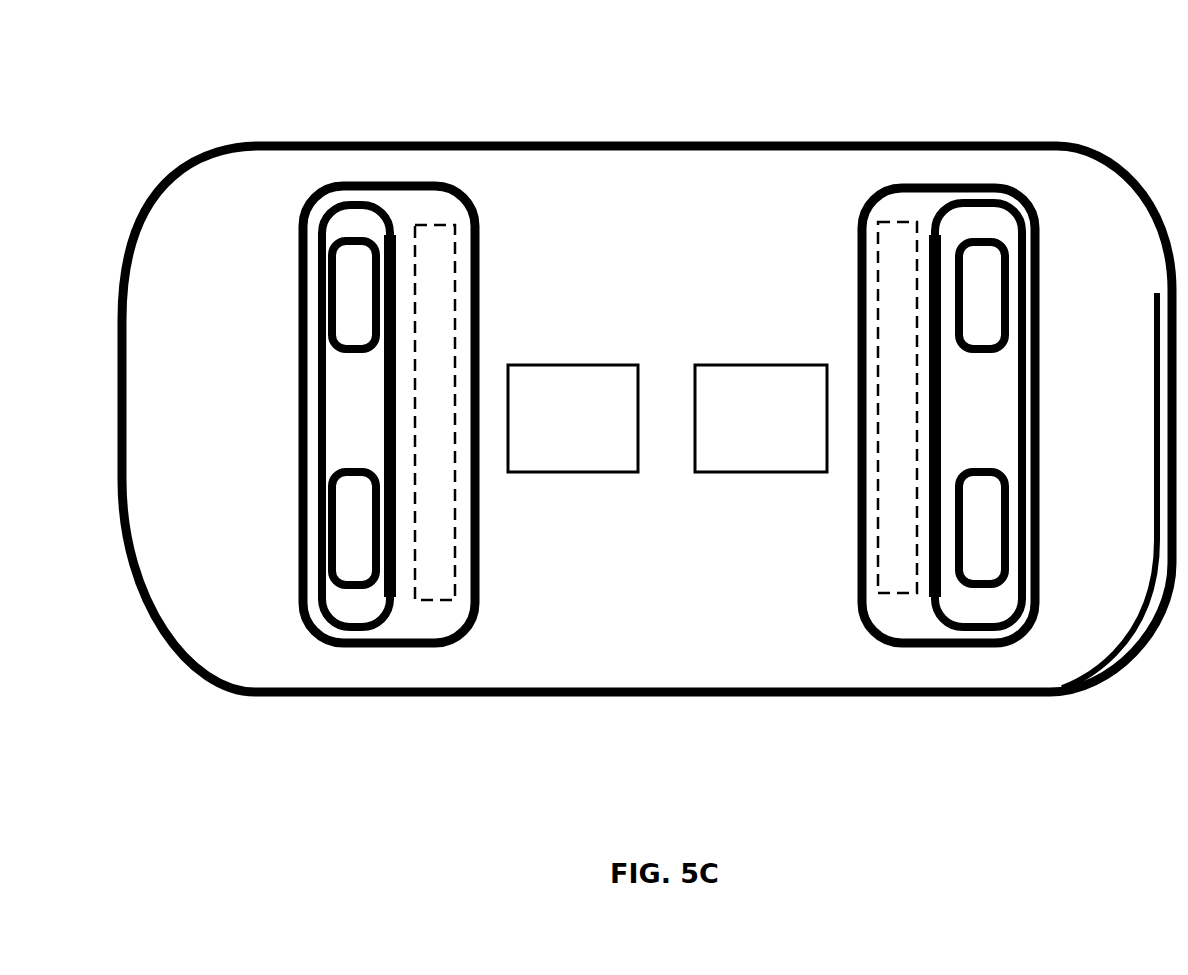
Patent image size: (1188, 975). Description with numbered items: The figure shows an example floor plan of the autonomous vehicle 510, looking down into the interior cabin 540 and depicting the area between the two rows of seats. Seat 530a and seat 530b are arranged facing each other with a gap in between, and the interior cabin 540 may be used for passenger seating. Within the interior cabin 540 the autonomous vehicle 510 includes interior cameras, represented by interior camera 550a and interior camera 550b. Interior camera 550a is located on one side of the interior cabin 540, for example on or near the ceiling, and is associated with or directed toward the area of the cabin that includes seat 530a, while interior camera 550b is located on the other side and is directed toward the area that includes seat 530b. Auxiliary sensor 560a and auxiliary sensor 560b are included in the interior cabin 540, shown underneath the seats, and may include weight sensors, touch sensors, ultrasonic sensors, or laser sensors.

The autonomous vehicle 510 is at (1002, 140).
The seat 530a is at (415, 643).
The seat 530b is at (930, 647).
The interior cabin 540 is at (664, 291).
The interior camera 550a is at (548, 461).
The interior camera 550b is at (736, 461).
The auxiliary sensor 560a is at (438, 218).
The auxiliary sensor 560b is at (897, 218).